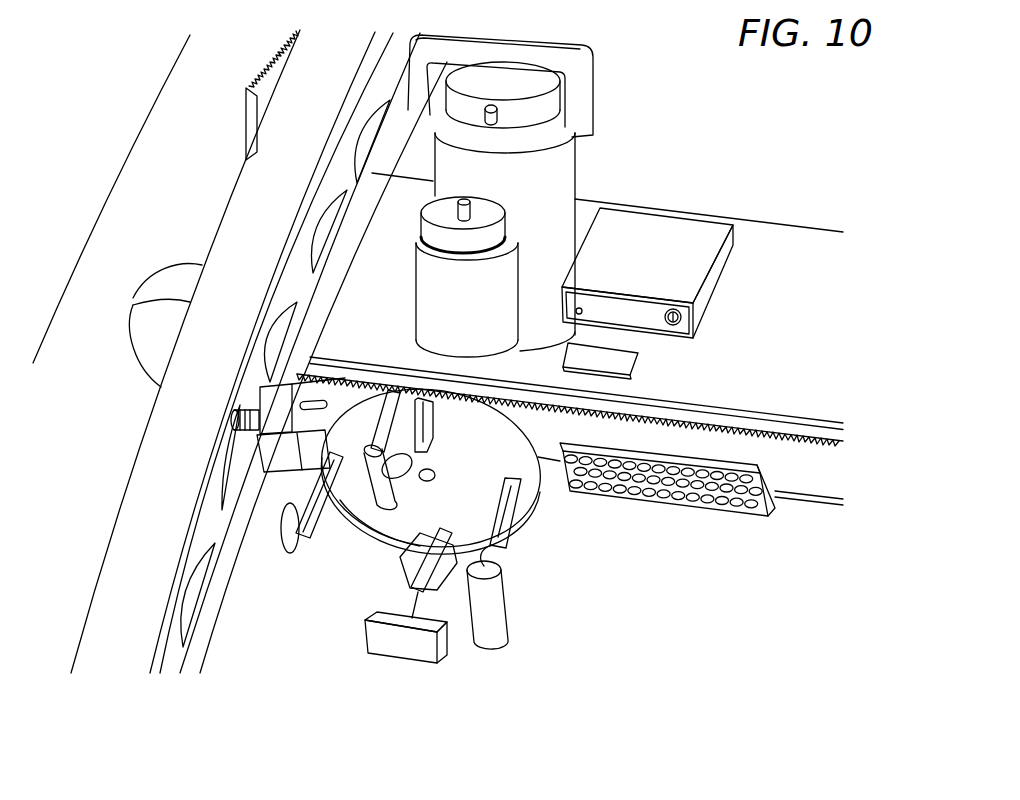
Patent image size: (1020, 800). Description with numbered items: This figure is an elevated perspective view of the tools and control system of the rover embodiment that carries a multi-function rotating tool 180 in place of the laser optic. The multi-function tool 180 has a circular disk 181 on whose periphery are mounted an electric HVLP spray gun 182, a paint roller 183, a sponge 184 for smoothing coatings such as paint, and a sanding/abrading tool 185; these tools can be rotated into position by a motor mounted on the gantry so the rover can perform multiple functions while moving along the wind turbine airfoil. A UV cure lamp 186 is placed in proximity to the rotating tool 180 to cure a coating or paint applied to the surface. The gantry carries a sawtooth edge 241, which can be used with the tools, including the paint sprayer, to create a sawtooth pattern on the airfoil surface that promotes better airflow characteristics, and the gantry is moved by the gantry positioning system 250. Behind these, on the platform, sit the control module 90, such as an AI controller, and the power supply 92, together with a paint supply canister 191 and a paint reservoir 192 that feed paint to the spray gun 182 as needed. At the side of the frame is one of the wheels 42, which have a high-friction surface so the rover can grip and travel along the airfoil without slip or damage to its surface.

The wheels 42 is at (133, 300).
The gantry positioning system 250 is at (268, 448).
The sawtooth edge 241 is at (812, 440).
The paint reservoir 192 is at (557, 178).
The paint supply canister 191 is at (430, 323).
The power supply 92 is at (712, 284).
The control module 90 is at (638, 358).
The UV cure lamp 186 is at (678, 498).
The circular disk 181 is at (477, 508).
The electric HVLP spray gun 182 is at (410, 422).
The paint roller 183 is at (509, 630).
The sponge 184 is at (395, 660).
The sanding/abrading tool 185 is at (294, 550).
The multi-function rotating tool 180 is at (365, 540).